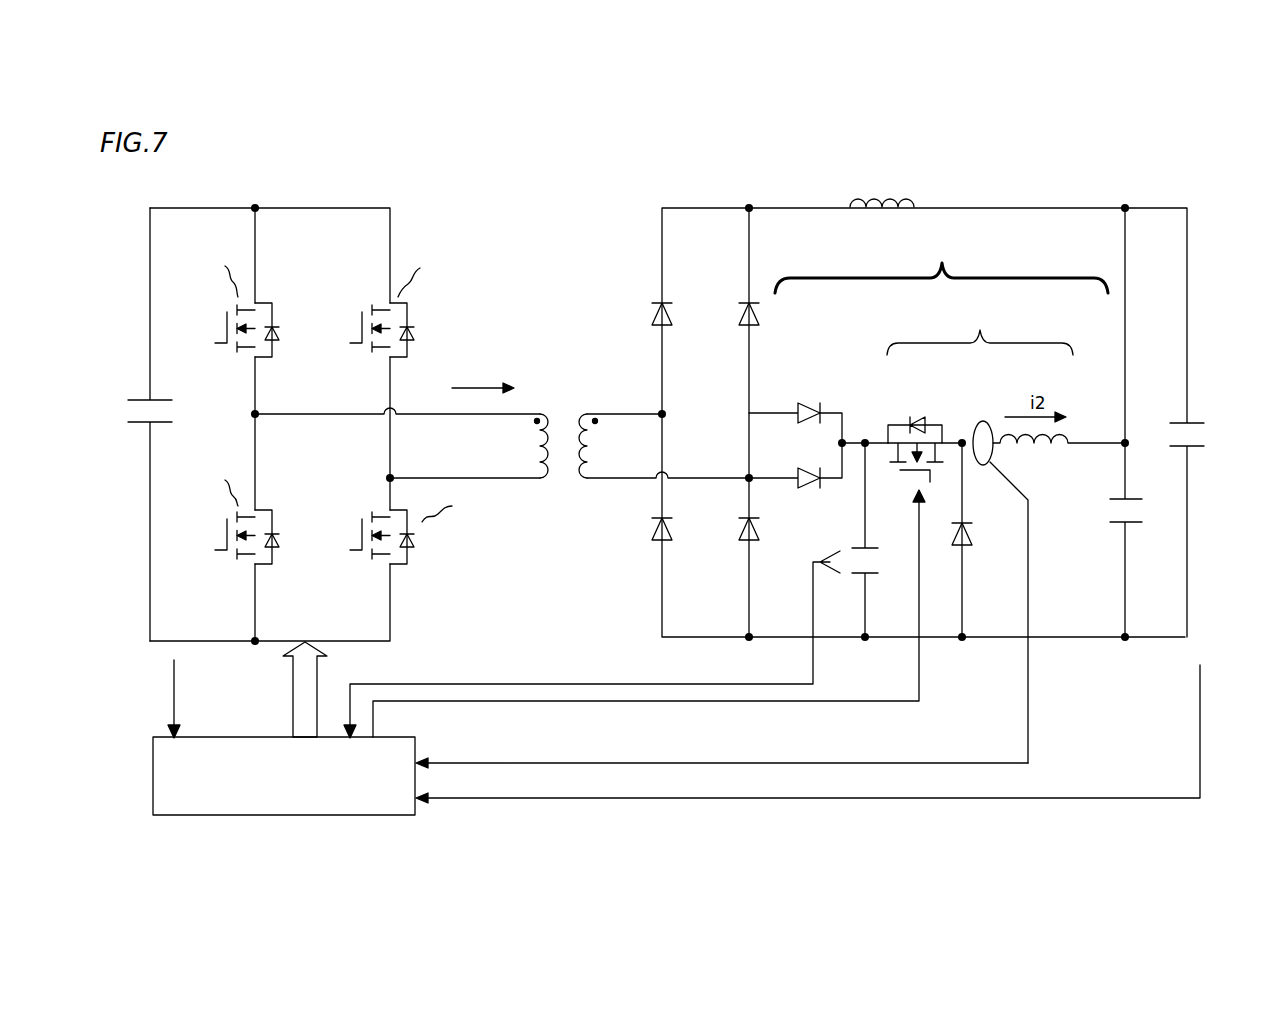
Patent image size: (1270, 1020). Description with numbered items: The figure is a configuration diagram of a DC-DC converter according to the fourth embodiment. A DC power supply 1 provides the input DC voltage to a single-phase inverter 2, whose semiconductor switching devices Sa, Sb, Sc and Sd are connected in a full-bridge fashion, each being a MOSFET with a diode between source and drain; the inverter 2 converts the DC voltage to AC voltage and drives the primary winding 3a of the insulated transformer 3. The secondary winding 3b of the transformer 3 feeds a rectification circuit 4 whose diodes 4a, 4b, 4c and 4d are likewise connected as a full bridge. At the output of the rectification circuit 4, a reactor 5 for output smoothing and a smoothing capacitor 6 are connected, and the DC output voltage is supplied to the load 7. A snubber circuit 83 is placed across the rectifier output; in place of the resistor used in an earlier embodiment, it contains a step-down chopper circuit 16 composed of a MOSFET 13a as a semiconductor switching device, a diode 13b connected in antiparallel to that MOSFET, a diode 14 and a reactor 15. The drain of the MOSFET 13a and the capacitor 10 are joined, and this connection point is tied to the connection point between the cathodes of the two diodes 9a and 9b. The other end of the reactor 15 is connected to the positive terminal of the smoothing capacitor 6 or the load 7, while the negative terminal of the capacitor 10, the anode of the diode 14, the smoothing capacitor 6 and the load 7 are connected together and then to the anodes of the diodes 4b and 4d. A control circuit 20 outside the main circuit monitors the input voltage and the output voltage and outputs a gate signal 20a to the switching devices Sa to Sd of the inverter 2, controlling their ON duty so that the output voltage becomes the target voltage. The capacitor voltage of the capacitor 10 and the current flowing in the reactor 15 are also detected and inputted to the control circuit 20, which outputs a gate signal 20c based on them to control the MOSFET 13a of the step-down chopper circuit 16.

The DC power supply 1 is at (127, 430).
The single-phase inverter 2 is at (312, 172).
The insulated transformer 3 is at (502, 452).
The primary winding 3a is at (552, 490).
The secondary winding 3b is at (586, 490).
The rectification circuit 4 is at (903, 382).
The diode 4a is at (646, 296).
The diode 4b is at (653, 548).
The diode 4c is at (736, 296).
The diode 4d is at (736, 552).
The reactor 5 is at (882, 182).
The smoothing capacitor 6 is at (1132, 486).
The load 7 is at (1198, 464).
The diode 9a is at (810, 400).
The diode 9b is at (810, 498).
The capacitor 10 is at (886, 566).
The MOSFET 13a is at (946, 440).
The diode 13b is at (914, 412).
The diode 14 is at (970, 530).
The reactor 15 is at (1042, 450).
The step-down chopper circuit 16 is at (990, 324).
The control circuit 20 is at (667, 652).
The gate signal 20a is at (290, 674).
The gate signal 20c is at (924, 698).
The snubber circuit 83 is at (952, 258).